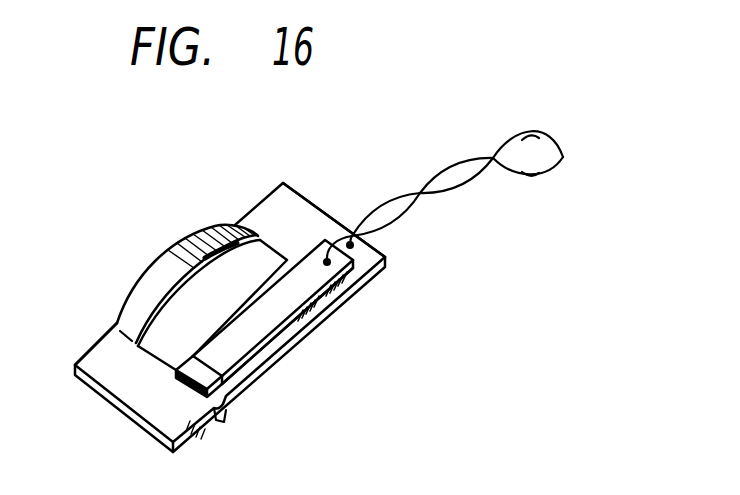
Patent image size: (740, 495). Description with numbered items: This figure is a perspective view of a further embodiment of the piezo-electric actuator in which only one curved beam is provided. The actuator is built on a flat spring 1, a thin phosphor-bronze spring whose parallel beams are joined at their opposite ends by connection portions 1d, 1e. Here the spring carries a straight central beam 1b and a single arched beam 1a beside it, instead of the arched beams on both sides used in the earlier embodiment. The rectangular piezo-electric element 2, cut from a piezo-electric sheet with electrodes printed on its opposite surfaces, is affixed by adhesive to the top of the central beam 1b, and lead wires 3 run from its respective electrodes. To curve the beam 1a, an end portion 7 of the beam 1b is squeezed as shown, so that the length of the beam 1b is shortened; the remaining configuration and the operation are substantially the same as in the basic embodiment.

The flat spring 1 is at (219, 231).
The curved beam 1a is at (171, 273).
The central beam 1b is at (293, 333).
The connection portion 1d is at (297, 212).
The connection portion 1e is at (131, 383).
The piezo-electric element 2 is at (311, 288).
The lead wires 3 is at (458, 194).
The end portion 7 is at (217, 423).